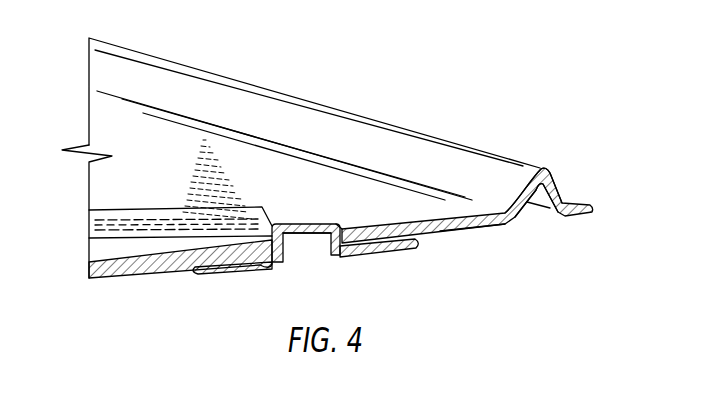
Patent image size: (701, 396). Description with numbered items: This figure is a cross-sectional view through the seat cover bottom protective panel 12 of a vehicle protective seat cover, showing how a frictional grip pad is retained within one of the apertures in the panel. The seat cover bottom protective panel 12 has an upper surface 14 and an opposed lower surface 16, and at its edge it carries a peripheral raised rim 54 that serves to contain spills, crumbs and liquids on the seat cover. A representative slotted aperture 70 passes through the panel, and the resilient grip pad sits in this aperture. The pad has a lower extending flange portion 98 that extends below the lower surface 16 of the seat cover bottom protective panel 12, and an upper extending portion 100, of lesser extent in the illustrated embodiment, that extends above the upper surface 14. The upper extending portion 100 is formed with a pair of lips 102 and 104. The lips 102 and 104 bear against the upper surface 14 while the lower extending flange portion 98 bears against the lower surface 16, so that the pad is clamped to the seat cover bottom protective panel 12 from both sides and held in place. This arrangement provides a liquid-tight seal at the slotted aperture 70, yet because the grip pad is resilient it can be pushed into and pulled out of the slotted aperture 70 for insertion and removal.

The seat cover bottom protective panel 12 is at (443, 233).
The upper surface 14 is at (465, 210).
The lower surface 16 is at (482, 230).
The peripheral raised rim 54 is at (525, 163).
The slotted aperture 70 is at (295, 248).
The lower extending flange portion 98 is at (238, 272).
The upper extending portion 100 is at (302, 222).
The lip 102 is at (273, 233).
The lip 104 is at (338, 223).